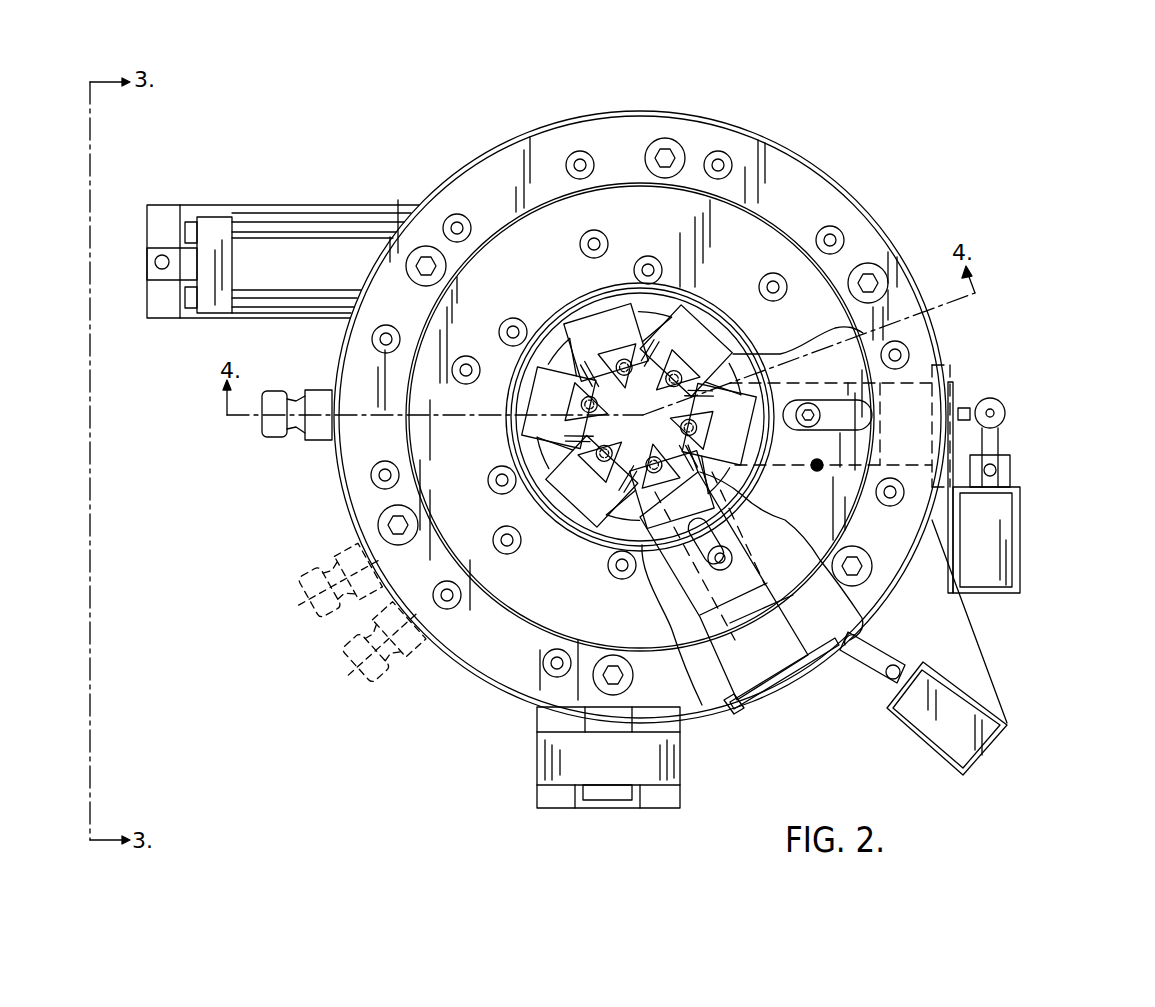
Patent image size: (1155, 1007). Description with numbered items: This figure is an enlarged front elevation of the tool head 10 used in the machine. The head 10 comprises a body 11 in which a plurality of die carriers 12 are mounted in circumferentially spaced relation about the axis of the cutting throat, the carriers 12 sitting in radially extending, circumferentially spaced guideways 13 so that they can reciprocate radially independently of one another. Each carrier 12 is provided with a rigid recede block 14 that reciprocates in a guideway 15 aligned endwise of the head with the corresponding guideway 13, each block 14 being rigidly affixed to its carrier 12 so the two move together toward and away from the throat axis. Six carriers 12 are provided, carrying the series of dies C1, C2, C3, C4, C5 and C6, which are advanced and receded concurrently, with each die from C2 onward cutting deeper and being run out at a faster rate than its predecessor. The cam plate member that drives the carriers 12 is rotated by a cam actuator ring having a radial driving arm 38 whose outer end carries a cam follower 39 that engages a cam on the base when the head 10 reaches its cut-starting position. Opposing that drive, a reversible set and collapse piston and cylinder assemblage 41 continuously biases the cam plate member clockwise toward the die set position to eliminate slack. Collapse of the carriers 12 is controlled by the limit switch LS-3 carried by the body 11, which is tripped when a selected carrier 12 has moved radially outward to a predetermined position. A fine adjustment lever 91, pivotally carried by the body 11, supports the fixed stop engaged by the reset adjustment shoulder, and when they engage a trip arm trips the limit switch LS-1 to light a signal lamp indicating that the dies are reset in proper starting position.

The head 10 is at (818, 148).
The body 11 is at (868, 228).
The die carriers 12 is at (612, 318).
The guideways 13 is at (870, 468).
The recede blocks 14 is at (755, 596).
The guideways 15 is at (787, 668).
The radial driving arm 38 is at (310, 442).
The cam follower 39 is at (272, 440).
The piston and cylinder assemblage 41 is at (270, 215).
The fine adjustment lever 91 is at (620, 798).
The limit switch LS-1 is at (1007, 723).
The limit switch LS-3 is at (1022, 520).
The first die C1 is at (708, 440).
The second die C2 is at (655, 483).
The third die C3 is at (575, 490).
The fourth die C4 is at (560, 400).
The fifth die C5 is at (635, 345).
The last die C6 is at (718, 352).